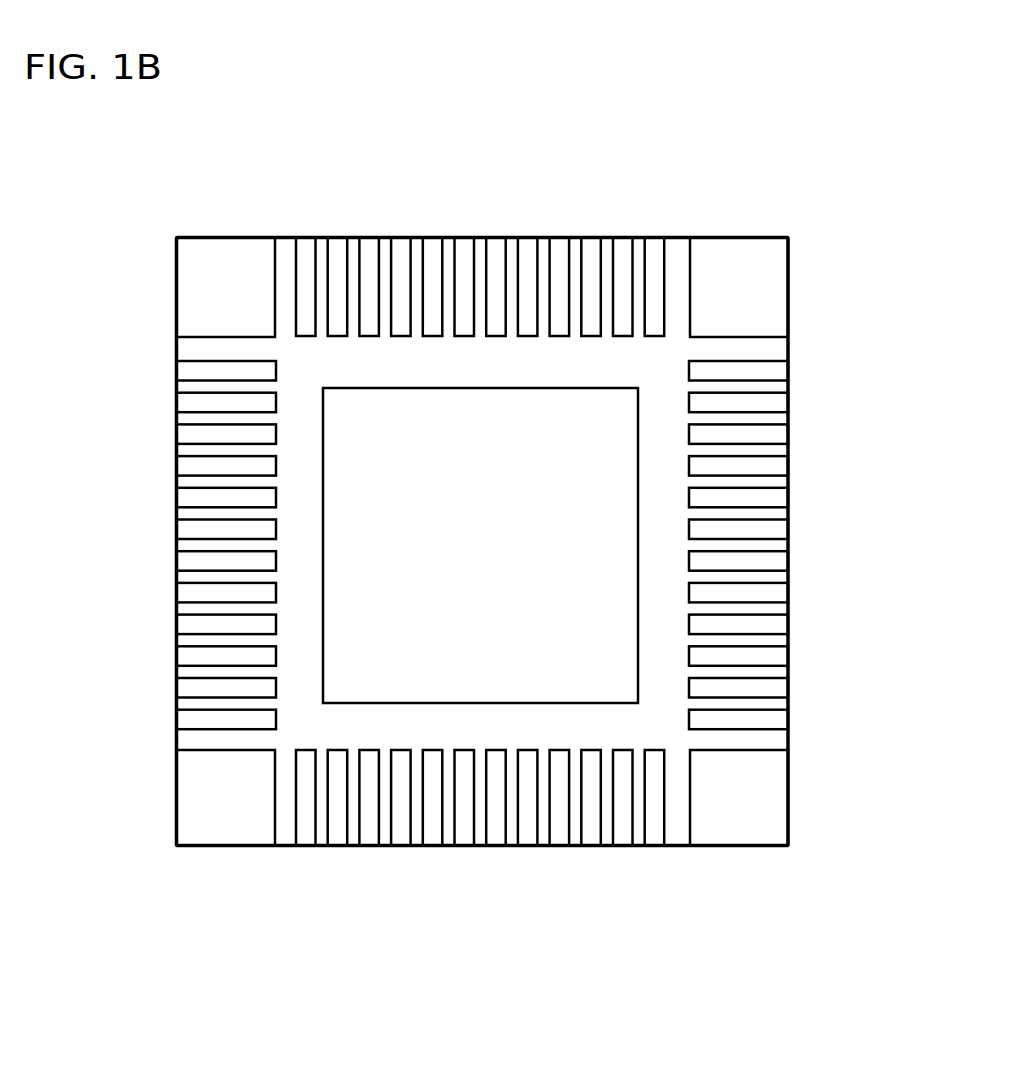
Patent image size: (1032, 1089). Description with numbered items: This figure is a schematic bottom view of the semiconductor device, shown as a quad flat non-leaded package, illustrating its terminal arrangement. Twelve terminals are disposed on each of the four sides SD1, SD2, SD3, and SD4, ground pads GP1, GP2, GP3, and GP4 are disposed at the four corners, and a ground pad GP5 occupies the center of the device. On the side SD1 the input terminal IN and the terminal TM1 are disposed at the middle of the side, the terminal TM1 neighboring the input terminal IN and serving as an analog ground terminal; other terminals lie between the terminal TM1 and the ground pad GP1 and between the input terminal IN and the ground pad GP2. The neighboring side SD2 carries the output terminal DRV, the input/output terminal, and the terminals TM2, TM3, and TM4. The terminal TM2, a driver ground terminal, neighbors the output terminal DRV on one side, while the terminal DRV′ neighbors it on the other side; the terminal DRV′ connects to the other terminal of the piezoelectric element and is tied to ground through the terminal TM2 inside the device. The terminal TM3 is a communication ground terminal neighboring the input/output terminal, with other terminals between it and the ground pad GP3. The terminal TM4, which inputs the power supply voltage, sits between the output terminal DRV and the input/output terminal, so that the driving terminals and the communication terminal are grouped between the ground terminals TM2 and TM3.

The ground pad GP1 is at (193, 283).
The ground pad GP2 is at (193, 803).
The ground pad GP3 is at (770, 807).
The ground pad GP4 is at (772, 287).
The ground pad GP5 is at (349, 386).
The side SD1 is at (166, 344).
The side SD2 is at (286, 857).
The side SD3 is at (802, 734).
The side SD4 is at (674, 226).
The terminal TM1 is at (193, 532).
The terminal TM2 is at (397, 830).
The terminal TM3 is at (588, 830).
The terminal TM4 is at (493, 830).
The input terminal IN is at (193, 563).
The output terminal DRV is at (427, 830).
The terminal DRV′ is at (460, 830).